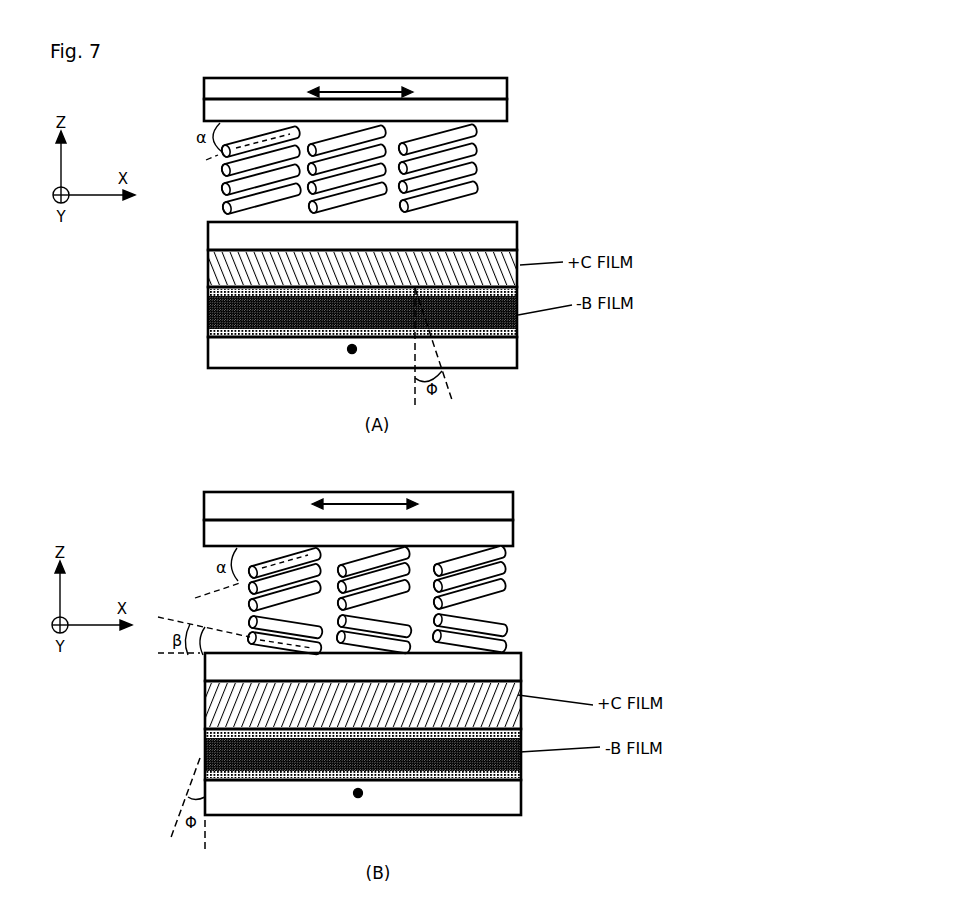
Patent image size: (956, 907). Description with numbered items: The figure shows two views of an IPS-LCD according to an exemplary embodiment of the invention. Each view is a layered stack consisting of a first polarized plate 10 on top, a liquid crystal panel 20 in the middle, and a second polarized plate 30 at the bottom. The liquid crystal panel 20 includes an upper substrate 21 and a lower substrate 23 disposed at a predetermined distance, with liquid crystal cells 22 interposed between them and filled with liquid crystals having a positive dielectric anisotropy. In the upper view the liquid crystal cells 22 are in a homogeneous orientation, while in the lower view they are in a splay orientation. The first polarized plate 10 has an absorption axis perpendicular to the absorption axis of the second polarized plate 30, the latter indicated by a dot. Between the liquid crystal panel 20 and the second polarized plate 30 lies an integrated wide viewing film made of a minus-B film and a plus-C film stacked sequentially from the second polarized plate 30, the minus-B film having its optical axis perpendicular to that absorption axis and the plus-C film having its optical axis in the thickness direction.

The first polarized plate 10 is at (495, 92).
The liquid crystal panel 20 is at (425, 390).
The upper substrate 21 is at (485, 110).
The liquid crystal cells 22 is at (497, 167).
The lower substrate 23 is at (495, 233).
The second polarized plate 30 is at (480, 353).